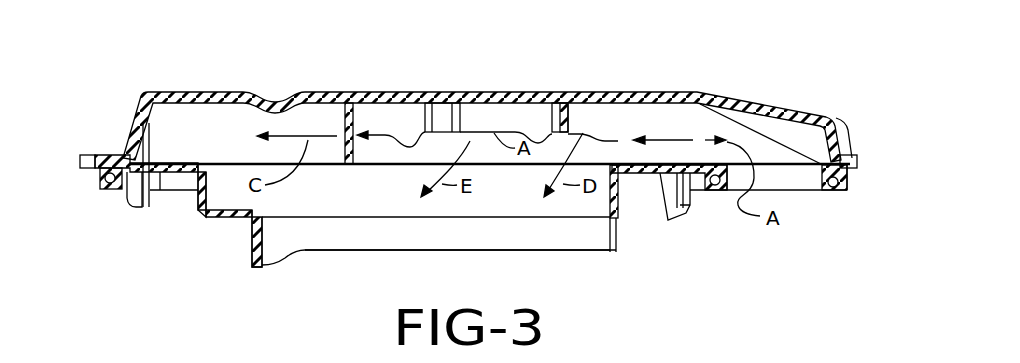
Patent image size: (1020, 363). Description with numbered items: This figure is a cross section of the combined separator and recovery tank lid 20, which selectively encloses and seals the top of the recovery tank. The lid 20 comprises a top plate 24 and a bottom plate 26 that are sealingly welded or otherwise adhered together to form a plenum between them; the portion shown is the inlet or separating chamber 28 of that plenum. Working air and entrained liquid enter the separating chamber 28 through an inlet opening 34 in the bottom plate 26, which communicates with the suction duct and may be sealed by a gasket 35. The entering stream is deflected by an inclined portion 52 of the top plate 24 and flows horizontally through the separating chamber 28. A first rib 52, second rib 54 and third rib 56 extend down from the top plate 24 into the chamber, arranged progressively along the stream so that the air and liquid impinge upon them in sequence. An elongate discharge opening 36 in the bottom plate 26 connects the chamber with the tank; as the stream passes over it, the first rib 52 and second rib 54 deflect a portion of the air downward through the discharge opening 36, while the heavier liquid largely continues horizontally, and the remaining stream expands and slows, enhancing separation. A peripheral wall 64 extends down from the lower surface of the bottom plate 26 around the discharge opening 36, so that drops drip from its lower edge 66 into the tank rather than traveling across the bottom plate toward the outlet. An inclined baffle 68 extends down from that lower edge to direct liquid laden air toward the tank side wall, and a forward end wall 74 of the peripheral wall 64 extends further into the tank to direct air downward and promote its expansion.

The combined separator and recovery tank lid 20 is at (758, 87).
The top plate 24 is at (224, 91).
The bottom plate 26 is at (160, 178).
The separating chamber 28 is at (623, 133).
The inlet opening 34 is at (806, 180).
The gasket 35 is at (111, 185).
The discharge opening 36 is at (517, 207).
The first rib 52 is at (571, 118).
The second rib 54 is at (447, 116).
The third rib 56 is at (338, 126).
The peripheral wall 64 is at (193, 198).
The lower edge 66 is at (615, 219).
The inclined baffle 68 is at (428, 238).
The forward end wall 74 is at (248, 253).